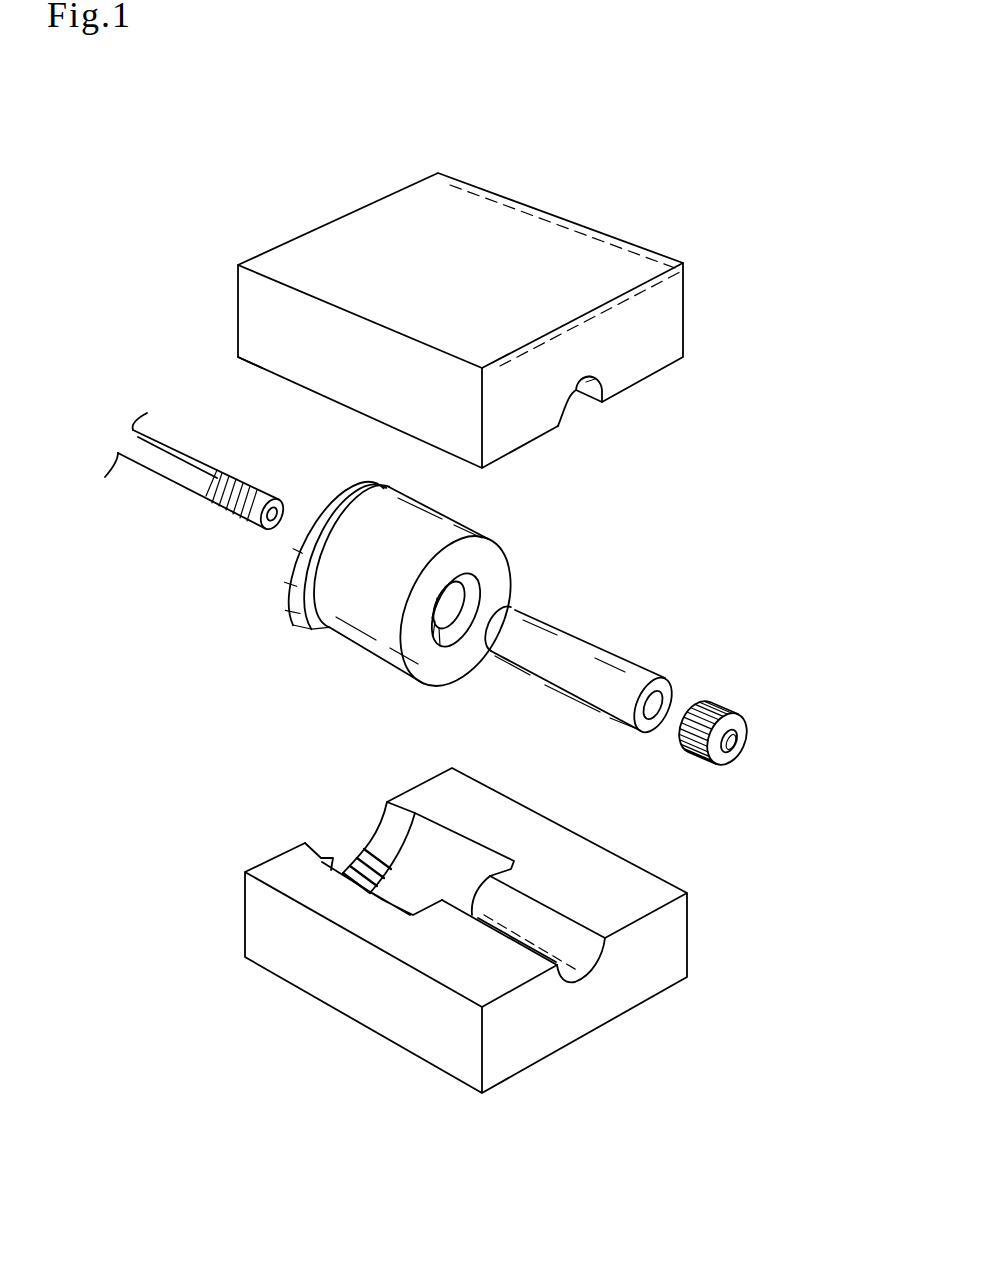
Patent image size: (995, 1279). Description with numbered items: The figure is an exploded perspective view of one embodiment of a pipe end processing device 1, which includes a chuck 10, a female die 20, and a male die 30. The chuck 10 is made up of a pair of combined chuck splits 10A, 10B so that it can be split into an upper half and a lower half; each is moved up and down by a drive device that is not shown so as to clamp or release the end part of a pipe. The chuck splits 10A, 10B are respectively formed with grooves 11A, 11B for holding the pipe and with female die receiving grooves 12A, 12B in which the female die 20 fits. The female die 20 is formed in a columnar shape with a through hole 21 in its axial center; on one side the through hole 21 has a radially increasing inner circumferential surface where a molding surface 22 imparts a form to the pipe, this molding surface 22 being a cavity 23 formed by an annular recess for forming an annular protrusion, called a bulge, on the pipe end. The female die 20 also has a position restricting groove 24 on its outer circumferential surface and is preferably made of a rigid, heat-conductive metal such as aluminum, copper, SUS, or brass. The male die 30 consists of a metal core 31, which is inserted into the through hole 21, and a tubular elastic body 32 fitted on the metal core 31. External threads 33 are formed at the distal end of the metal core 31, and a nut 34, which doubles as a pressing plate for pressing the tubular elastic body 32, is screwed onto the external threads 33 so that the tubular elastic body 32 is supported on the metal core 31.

The pipe end processing device 1 is at (736, 595).
The chuck 10 is at (343, 247).
The chuck split 10A is at (548, 248).
The chuck split 10B is at (362, 980).
The groove 11A is at (577, 392).
The groove 11B is at (545, 928).
The female die receiving groove 12A is at (258, 365).
The female die receiving groove 12B is at (395, 865).
The female die 20 is at (318, 654).
The through hole 21 is at (462, 633).
The molding surface 22 is at (483, 587).
The cavity 23 is at (468, 612).
The position restricting groove 24 is at (327, 530).
The male die 30 is at (617, 637).
The metal core 31 is at (167, 467).
The tubular elastic body 32 is at (587, 675).
The external threads 33 is at (245, 517).
The nut 34 is at (736, 722).